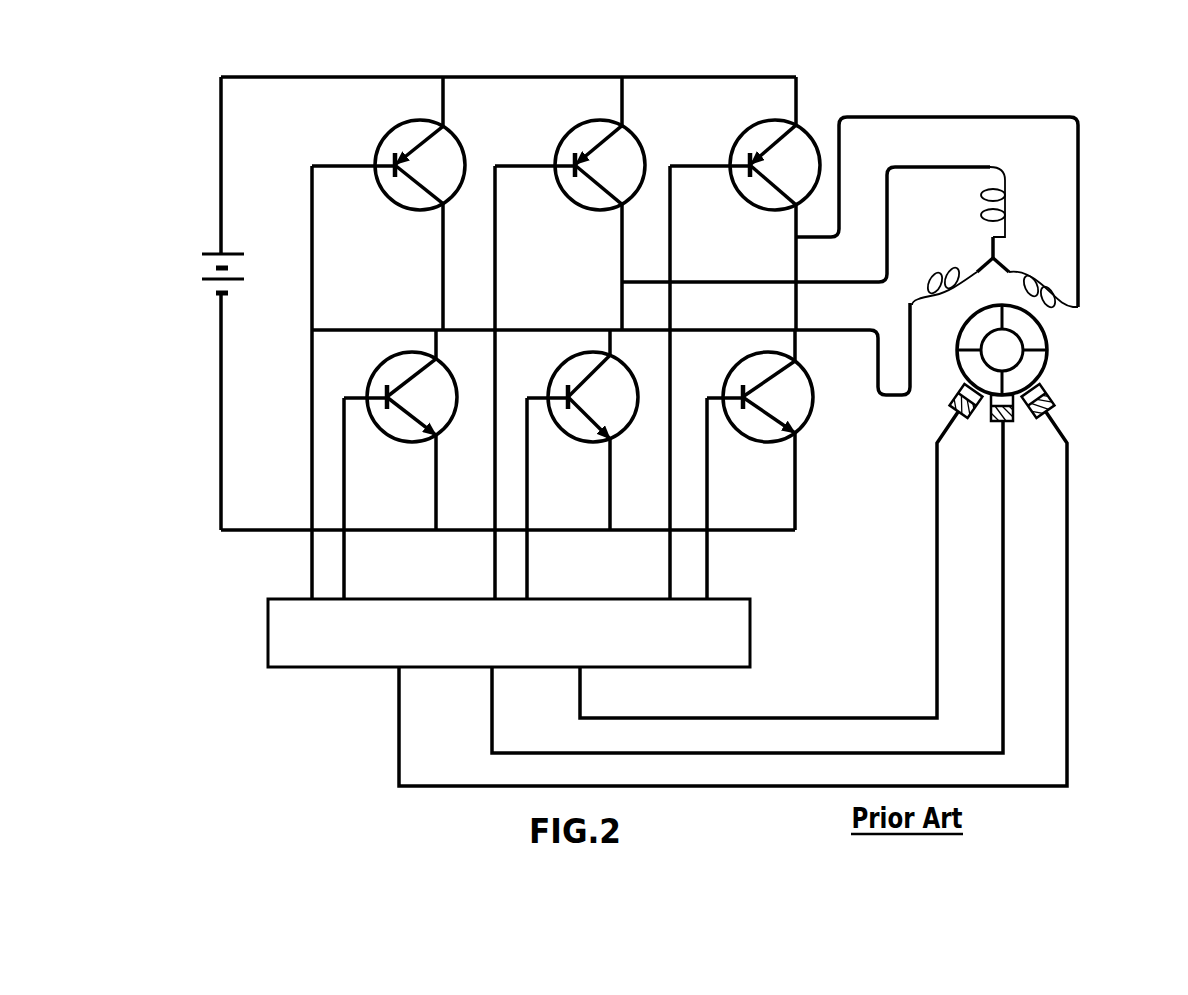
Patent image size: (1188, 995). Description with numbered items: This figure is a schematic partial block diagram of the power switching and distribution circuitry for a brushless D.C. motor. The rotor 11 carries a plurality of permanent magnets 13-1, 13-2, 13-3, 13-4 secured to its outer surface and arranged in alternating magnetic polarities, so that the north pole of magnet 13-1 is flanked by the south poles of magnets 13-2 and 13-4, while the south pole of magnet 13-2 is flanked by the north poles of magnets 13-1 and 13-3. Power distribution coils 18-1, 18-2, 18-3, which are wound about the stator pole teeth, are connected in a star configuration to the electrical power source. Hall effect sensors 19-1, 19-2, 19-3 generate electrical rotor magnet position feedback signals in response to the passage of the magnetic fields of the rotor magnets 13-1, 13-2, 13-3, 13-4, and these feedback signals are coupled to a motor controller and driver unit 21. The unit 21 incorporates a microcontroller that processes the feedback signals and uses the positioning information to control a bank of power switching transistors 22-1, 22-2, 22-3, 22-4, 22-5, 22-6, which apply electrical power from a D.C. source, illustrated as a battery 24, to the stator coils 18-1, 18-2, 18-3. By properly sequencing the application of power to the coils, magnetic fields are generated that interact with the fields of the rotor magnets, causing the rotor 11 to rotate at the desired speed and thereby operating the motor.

The rotor 11 is at (1007, 352).
The permanent magnet 13-1 is at (1038, 358).
The permanent magnet 13-2 is at (967, 370).
The permanent magnet 13-3 is at (995, 317).
The permanent magnet 13-4 is at (1033, 337).
The power distribution coil 18-1 is at (1013, 202).
The power distribution coil 18-2 is at (1037, 273).
The power distribution coil 18-3 is at (930, 272).
The Hall effect sensor 19-1 is at (1047, 408).
The Hall effect sensor 19-2 is at (1002, 423).
The Hall effect sensor 19-3 is at (967, 423).
The motor controller and driver unit 21 is at (712, 642).
The power switching transistor 22-1 is at (445, 158).
The power switching transistor 22-2 is at (618, 158).
The power switching transistor 22-3 is at (800, 152).
The power switching transistor 22-4 is at (422, 392).
The power switching transistor 22-5 is at (597, 395).
The power switching transistor 22-6 is at (777, 392).
The battery 24 is at (203, 270).